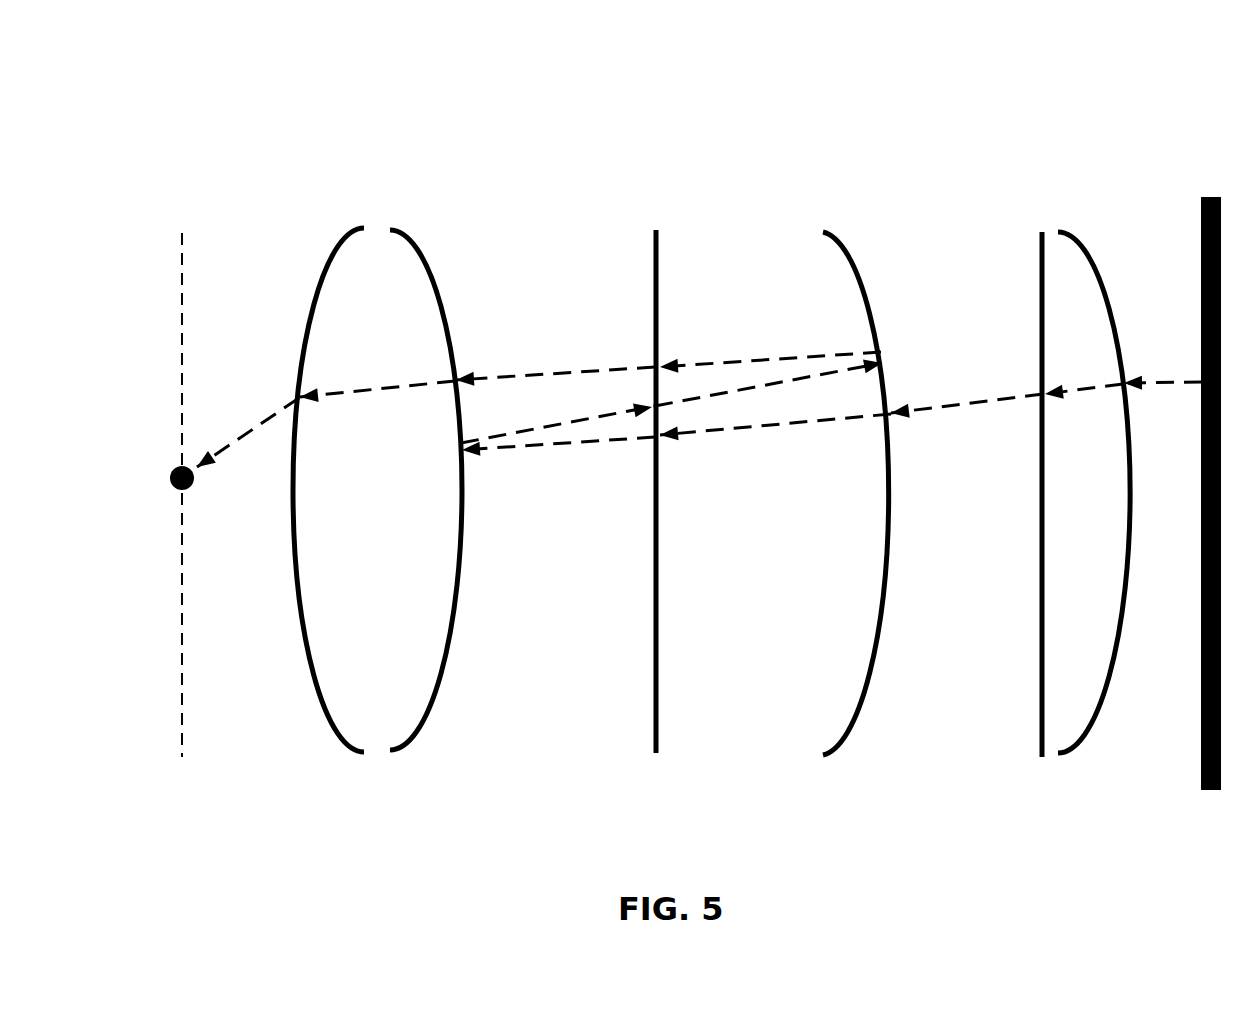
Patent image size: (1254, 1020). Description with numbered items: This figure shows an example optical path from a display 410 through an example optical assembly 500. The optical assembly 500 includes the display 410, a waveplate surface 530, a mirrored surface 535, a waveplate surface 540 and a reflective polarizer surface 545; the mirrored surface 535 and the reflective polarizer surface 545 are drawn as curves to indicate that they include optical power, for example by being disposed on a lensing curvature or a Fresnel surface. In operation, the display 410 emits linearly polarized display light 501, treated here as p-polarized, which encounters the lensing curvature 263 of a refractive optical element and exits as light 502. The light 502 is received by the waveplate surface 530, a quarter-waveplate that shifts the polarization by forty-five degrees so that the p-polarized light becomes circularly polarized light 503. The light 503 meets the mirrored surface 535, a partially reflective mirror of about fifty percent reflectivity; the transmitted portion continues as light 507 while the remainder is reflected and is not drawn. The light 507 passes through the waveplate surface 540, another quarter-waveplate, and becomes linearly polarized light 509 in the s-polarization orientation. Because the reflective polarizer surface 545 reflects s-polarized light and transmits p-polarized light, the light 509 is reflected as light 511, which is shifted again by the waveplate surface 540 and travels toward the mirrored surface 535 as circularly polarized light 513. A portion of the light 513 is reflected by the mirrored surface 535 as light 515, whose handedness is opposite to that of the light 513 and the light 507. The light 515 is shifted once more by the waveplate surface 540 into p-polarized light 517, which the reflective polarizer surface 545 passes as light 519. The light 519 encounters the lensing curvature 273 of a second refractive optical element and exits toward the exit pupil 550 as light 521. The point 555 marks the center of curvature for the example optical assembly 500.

The optical assembly 500 is at (1120, 28).
The display 410 is at (1213, 197).
The waveplate surface 530 is at (1042, 230).
The mirrored surface 535 is at (833, 230).
The waveplate surface 540 is at (655, 228).
The reflective polarizer surface 545 is at (397, 226).
The lensing curvature 263 is at (1093, 725).
The lensing curvature 273 is at (342, 743).
The exit pupil 550 is at (182, 232).
The point 555 is at (172, 470).
The display light 501 is at (1163, 373).
The light 502 is at (1084, 380).
The circularly polarized light 503 is at (967, 398).
The light 507 is at (775, 435).
The linearly polarized light 509 is at (558, 456).
The light 511 is at (558, 415).
The circularly polarized light 513 is at (768, 383).
The light 515 is at (770, 355).
The p-polarized light 517 is at (555, 368).
The light 519 is at (377, 382).
The light 521 is at (244, 432).